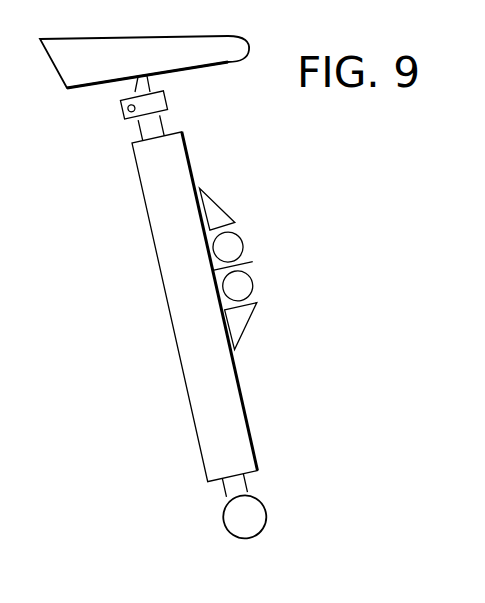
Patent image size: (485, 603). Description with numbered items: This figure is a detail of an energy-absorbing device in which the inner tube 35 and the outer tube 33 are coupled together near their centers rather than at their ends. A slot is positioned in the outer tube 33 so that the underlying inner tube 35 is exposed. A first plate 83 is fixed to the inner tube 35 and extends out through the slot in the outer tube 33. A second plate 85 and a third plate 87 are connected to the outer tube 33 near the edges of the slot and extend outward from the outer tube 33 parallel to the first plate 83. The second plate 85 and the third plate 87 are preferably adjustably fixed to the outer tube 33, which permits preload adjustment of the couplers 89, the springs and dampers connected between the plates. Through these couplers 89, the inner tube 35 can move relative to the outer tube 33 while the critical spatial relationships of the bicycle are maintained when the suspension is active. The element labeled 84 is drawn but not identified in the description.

The outer tube 33 is at (185, 145).
The inner tube 35 is at (173, 175).
The first plate 83 is at (195, 252).
The circular indicator 84 is at (245, 240).
The second plate 85 is at (223, 223).
The third plate 87 is at (245, 313).
The couplers 89 is at (250, 285).